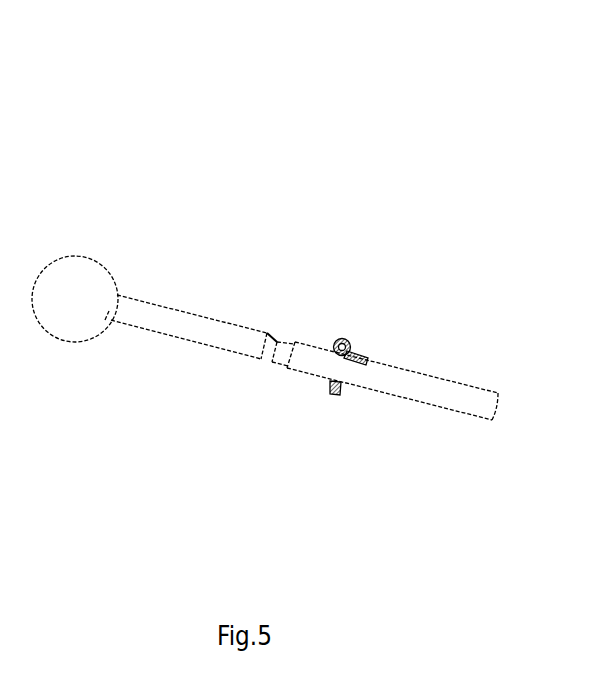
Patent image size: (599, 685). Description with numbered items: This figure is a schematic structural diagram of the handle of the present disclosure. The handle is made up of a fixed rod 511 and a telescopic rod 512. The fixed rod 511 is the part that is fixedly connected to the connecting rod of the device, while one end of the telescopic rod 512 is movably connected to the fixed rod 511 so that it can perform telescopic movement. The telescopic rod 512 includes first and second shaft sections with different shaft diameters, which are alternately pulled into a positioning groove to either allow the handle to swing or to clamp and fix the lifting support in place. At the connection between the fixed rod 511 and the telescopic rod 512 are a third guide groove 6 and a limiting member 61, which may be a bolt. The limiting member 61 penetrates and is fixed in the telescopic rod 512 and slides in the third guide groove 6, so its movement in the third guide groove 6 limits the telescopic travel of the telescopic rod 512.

The telescopic rod 512 is at (284, 347).
The fixed rod 511 is at (406, 386).
The third guide groove 6 is at (367, 357).
The limiting member 61 is at (349, 341).